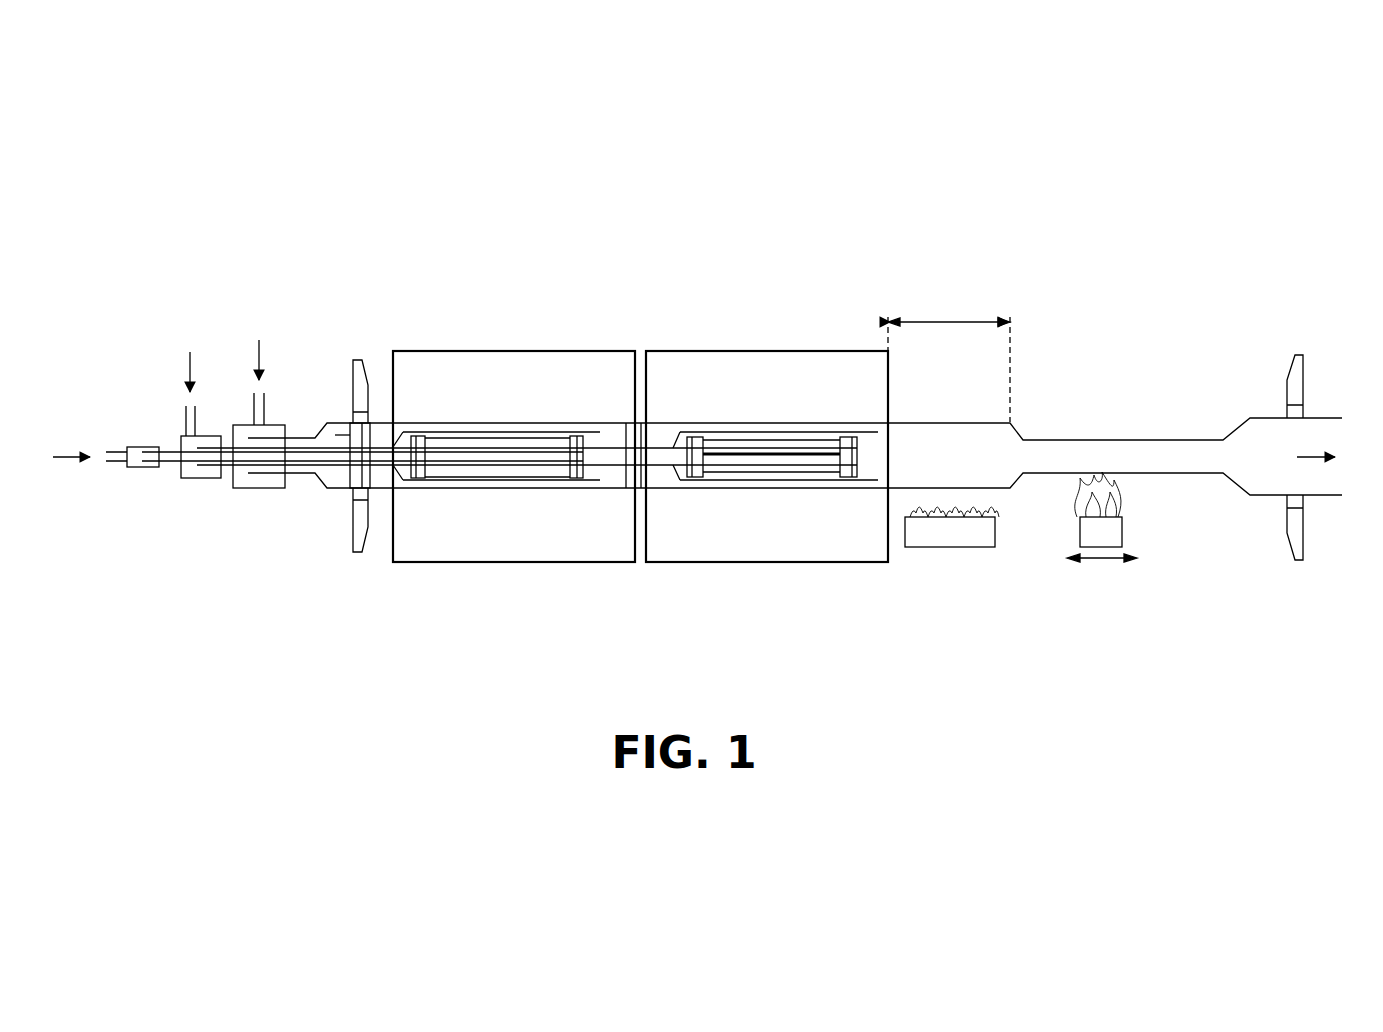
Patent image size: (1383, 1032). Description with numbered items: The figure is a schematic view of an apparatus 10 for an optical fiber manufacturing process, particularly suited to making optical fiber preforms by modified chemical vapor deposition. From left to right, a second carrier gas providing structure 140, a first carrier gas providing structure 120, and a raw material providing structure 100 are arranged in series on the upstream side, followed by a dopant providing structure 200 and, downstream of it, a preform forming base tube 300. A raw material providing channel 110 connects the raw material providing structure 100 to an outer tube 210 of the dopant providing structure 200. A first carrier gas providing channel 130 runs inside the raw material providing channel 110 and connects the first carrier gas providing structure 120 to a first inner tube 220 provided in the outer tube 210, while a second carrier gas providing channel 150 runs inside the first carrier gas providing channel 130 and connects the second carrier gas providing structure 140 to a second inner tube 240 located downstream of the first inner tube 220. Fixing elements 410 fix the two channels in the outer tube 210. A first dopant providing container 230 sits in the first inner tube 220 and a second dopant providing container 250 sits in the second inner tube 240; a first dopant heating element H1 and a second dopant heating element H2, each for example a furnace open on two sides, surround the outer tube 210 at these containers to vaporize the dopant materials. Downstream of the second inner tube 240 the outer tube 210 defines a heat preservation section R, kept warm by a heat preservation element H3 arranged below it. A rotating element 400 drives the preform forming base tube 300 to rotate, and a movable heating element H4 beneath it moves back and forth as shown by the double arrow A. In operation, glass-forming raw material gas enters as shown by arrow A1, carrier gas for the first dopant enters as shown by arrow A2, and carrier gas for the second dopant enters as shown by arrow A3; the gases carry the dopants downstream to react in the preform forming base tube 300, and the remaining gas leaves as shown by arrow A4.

The apparatus for optical fiber manufacturing process 10 is at (88, 213).
The raw material providing structure 100 is at (258, 488).
The raw material providing channel 110 is at (305, 482).
The first carrier gas providing structure 120 is at (186, 478).
The first carrier gas providing channel 130 is at (206, 478).
The second carrier gas providing structure 140 is at (134, 467).
The second carrier gas providing channel 150 is at (152, 467).
The dopant providing structure 200 is at (615, 550).
The outer tube 210 is at (378, 490).
The first inner tube 220 is at (460, 480).
The first dopant providing container 230 is at (557, 480).
The second inner tube 240 is at (728, 480).
The second dopant providing container 250 is at (829, 524).
The preform forming base tube 300 is at (1163, 440).
The rotating element 400 is at (355, 360).
The fixing element 410 is at (335, 435).
The first dopant heating element H1 is at (513, 350).
The second dopant heating element H2 is at (765, 350).
The heat preservation element H3 is at (952, 547).
The movable heating element H4 is at (1122, 530).
The double arrow A is at (1102, 575).
The arrow A1 is at (258, 345).
The arrow A2 is at (189, 357).
The arrow A3 is at (72, 457).
The arrow A4 is at (1340, 457).
The heat preservation section R is at (949, 356).